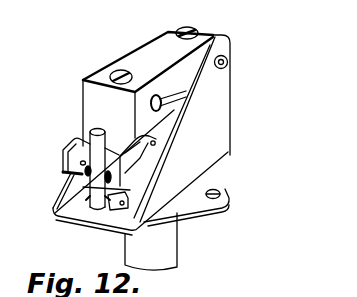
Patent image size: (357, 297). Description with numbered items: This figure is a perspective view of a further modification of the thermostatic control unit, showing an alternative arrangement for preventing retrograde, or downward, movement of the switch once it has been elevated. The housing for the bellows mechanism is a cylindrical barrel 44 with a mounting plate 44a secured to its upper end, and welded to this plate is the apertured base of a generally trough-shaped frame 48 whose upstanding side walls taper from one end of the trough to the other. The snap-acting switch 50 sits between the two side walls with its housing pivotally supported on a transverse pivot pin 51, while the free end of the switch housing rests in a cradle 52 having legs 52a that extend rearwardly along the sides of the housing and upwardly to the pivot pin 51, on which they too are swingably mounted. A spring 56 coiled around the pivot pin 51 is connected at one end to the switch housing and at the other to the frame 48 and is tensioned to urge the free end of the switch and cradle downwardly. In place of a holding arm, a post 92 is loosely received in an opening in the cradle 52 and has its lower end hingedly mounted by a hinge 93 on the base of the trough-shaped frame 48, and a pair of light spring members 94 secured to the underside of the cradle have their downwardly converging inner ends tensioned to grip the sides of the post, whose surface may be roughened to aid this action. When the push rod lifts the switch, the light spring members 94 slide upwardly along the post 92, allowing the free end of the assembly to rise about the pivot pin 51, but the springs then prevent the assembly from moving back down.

The cylindrical barrel 44 is at (163, 245).
The mounting plate 44a is at (212, 182).
The trough-shaped frame 48 is at (222, 117).
The snap-acting switch 50 is at (135, 60).
The transverse pivot pin 51 is at (228, 62).
The cradle 52 is at (62, 165).
The legs 52a is at (168, 140).
The spring 56 is at (181, 108).
The post 92 is at (85, 131).
The hinge 93 is at (115, 227).
The light spring members 94 is at (157, 166).